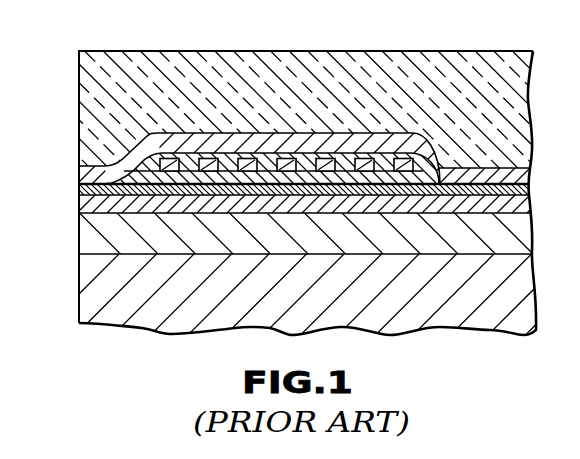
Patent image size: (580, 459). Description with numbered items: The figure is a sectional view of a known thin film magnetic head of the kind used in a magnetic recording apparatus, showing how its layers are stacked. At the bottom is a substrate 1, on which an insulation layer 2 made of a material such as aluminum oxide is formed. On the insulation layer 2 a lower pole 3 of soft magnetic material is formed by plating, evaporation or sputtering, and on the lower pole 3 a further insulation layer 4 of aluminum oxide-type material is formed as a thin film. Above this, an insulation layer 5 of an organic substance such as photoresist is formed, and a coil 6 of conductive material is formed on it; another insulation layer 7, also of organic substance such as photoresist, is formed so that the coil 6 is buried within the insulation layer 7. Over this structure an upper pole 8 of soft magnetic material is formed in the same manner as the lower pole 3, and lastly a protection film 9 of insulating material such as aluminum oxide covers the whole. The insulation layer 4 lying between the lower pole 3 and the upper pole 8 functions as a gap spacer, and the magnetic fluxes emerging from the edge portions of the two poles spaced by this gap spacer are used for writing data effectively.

The substrate 1 is at (80, 285).
The insulation layer 2 is at (82, 237).
The lower pole 3 is at (80, 209).
The insulation layer 4 is at (80, 190).
The insulation layer 5 is at (310, 179).
The coil 6 is at (367, 156).
The insulation layer 7 is at (267, 160).
The upper pole 8 is at (80, 177).
The protection film 9 is at (155, 78).